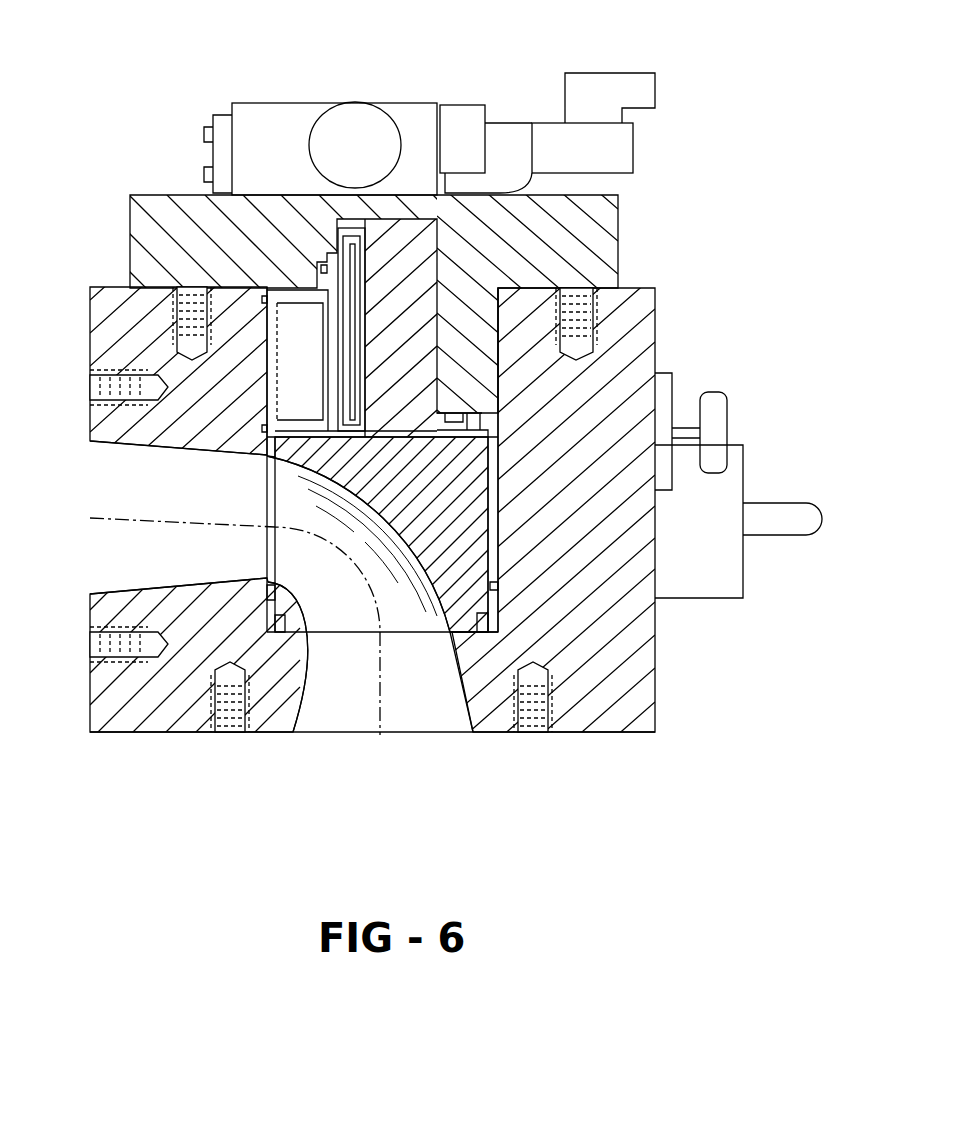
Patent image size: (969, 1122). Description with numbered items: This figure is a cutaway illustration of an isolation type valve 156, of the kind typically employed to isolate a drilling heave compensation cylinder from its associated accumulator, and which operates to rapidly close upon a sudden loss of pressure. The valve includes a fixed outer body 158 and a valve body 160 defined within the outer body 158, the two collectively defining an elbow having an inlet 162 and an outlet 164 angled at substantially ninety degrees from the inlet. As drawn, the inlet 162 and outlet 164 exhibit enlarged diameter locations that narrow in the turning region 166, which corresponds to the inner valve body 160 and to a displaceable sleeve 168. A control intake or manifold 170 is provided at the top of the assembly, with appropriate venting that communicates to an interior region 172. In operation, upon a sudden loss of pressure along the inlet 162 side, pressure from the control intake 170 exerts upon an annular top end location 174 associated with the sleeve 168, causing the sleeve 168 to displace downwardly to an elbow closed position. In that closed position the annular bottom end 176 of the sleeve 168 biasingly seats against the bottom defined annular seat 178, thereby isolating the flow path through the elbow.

The isolation type valve 156 is at (147, 110).
The fixed outer body 158 is at (628, 648).
The valve body 160 is at (473, 483).
The inlet 162 is at (333, 733).
The outlet 164 is at (100, 480).
The turning region 166 is at (358, 544).
The displaceable sleeve 168 is at (268, 490).
The control intake 170 is at (352, 123).
The interior region 172 is at (295, 348).
The annular top end location 174 is at (303, 418).
The annular bottom end 176 is at (268, 579).
The annular seat 178 is at (278, 628).